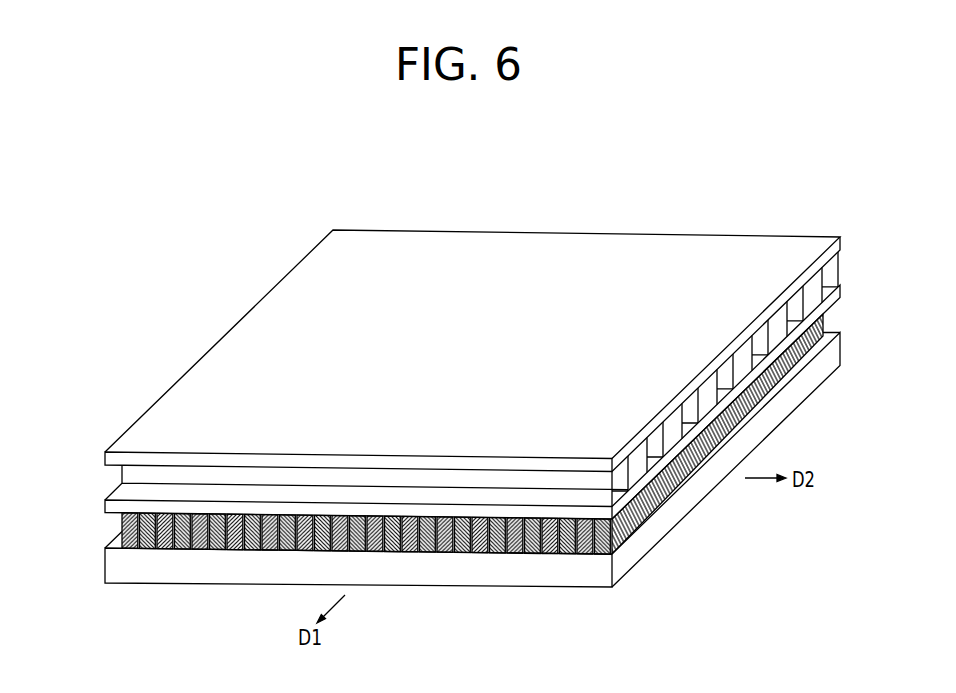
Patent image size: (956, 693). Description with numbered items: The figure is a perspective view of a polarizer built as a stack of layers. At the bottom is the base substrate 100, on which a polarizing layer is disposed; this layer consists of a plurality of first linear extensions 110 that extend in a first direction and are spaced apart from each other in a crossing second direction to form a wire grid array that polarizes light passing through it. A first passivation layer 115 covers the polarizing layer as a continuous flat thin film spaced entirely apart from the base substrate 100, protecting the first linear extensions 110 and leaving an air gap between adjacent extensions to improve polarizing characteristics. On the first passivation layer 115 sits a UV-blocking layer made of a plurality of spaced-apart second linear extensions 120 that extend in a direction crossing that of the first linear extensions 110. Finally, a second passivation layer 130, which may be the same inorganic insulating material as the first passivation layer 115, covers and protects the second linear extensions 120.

The base substrate 100 is at (110, 565).
The first linear extensions 110 is at (163, 549).
The first passivation layer 115 is at (110, 508).
The second linear extensions 120 is at (636, 469).
The second passivation layer 130 is at (208, 373).